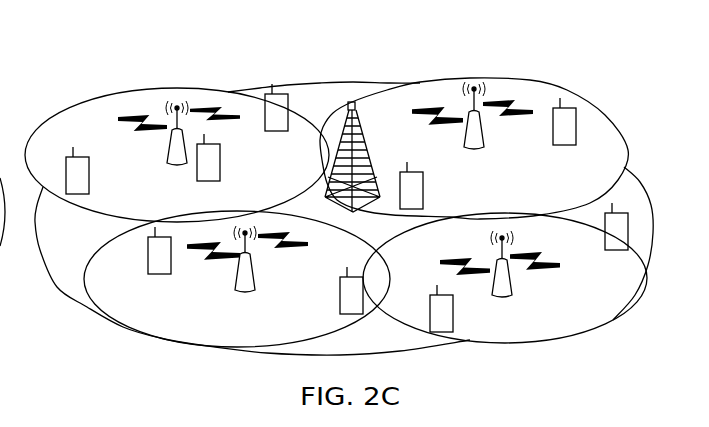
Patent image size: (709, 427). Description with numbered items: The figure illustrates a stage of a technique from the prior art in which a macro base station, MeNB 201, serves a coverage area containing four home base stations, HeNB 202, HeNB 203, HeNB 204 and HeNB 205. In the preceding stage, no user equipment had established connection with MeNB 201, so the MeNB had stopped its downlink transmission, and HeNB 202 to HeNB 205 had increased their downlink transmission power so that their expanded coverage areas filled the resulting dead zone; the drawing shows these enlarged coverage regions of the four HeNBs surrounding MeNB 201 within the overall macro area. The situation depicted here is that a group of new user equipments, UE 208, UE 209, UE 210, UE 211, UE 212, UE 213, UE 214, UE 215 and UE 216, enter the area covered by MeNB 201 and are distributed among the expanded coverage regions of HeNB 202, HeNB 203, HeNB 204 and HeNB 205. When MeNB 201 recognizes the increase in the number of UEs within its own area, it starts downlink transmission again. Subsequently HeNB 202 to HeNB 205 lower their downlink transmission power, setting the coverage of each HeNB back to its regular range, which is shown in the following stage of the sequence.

The MeNB 201 is at (353, 96).
The HeNB 202 is at (177, 105).
The HeNB 203 is at (244, 232).
The HeNB 204 is at (477, 87).
The HeNB 205 is at (502, 236).
The UE 208 is at (82, 134).
The UE 209 is at (148, 249).
The UE 210 is at (220, 158).
The UE 211 is at (273, 84).
The UE 212 is at (340, 294).
The UE 213 is at (423, 174).
The UE 214 is at (433, 294).
The UE 215 is at (575, 108).
The UE 216 is at (621, 211).